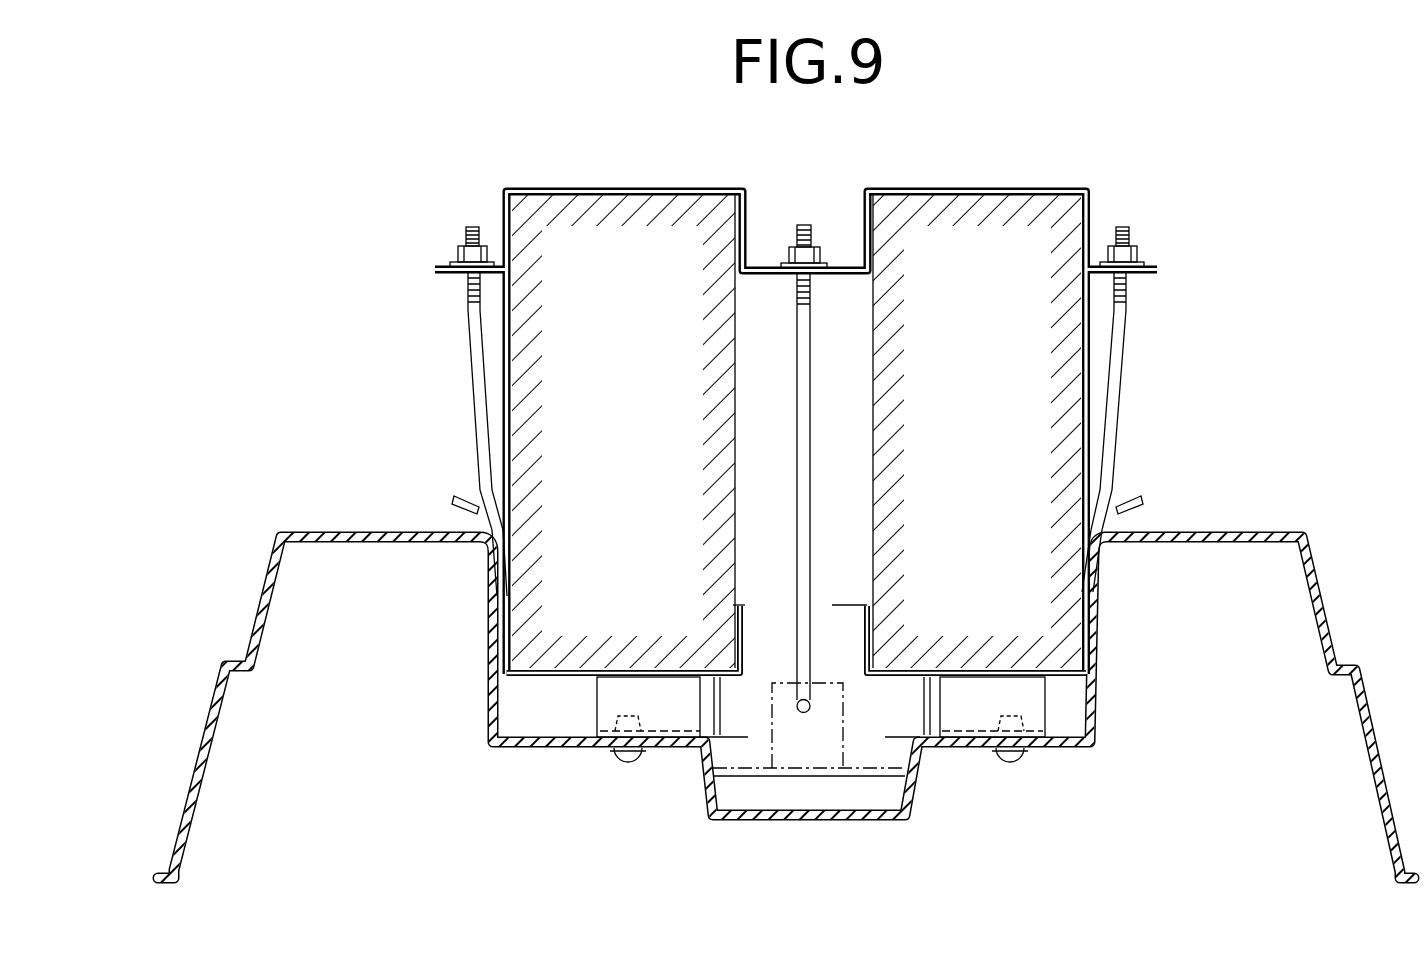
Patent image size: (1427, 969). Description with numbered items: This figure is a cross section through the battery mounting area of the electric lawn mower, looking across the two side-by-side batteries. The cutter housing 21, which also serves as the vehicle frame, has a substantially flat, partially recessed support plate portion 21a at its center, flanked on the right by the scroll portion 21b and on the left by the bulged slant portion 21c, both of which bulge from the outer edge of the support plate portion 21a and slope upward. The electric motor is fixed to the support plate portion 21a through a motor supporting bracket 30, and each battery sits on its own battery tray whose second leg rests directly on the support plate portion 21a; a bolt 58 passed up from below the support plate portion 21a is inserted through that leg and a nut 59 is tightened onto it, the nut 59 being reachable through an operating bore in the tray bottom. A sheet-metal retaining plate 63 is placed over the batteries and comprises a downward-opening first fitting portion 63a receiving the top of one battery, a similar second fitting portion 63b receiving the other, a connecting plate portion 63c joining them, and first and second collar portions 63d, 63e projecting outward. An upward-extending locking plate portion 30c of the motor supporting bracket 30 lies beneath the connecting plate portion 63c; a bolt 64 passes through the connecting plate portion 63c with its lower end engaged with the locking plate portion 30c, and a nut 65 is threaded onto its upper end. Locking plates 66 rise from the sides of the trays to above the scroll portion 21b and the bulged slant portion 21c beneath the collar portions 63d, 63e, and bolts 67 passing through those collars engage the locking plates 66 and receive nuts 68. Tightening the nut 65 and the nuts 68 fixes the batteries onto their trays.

The cutter housing 21 is at (1333, 584).
The support plate portion 21a is at (567, 722).
The scroll portion 21b is at (380, 534).
The bulged slant portion 21c is at (1183, 533).
The motor supporting bracket 30 is at (810, 777).
The locking plate portion 30c is at (843, 735).
The bolt 58 is at (627, 755).
The nut 59 is at (620, 725).
The retaining plate 63 is at (879, 187).
The first fitting portion 63a is at (641, 189).
The second fitting portion 63b is at (953, 189).
The connecting plate portion 63c is at (762, 268).
The first collar portion 63d is at (445, 268).
The second collar portion 63e is at (1160, 269).
The bolt 64 is at (800, 420).
The nut 65 is at (812, 245).
The locking plate 66 is at (447, 542).
The bolt 67 is at (475, 378).
The nut 68 is at (458, 258).